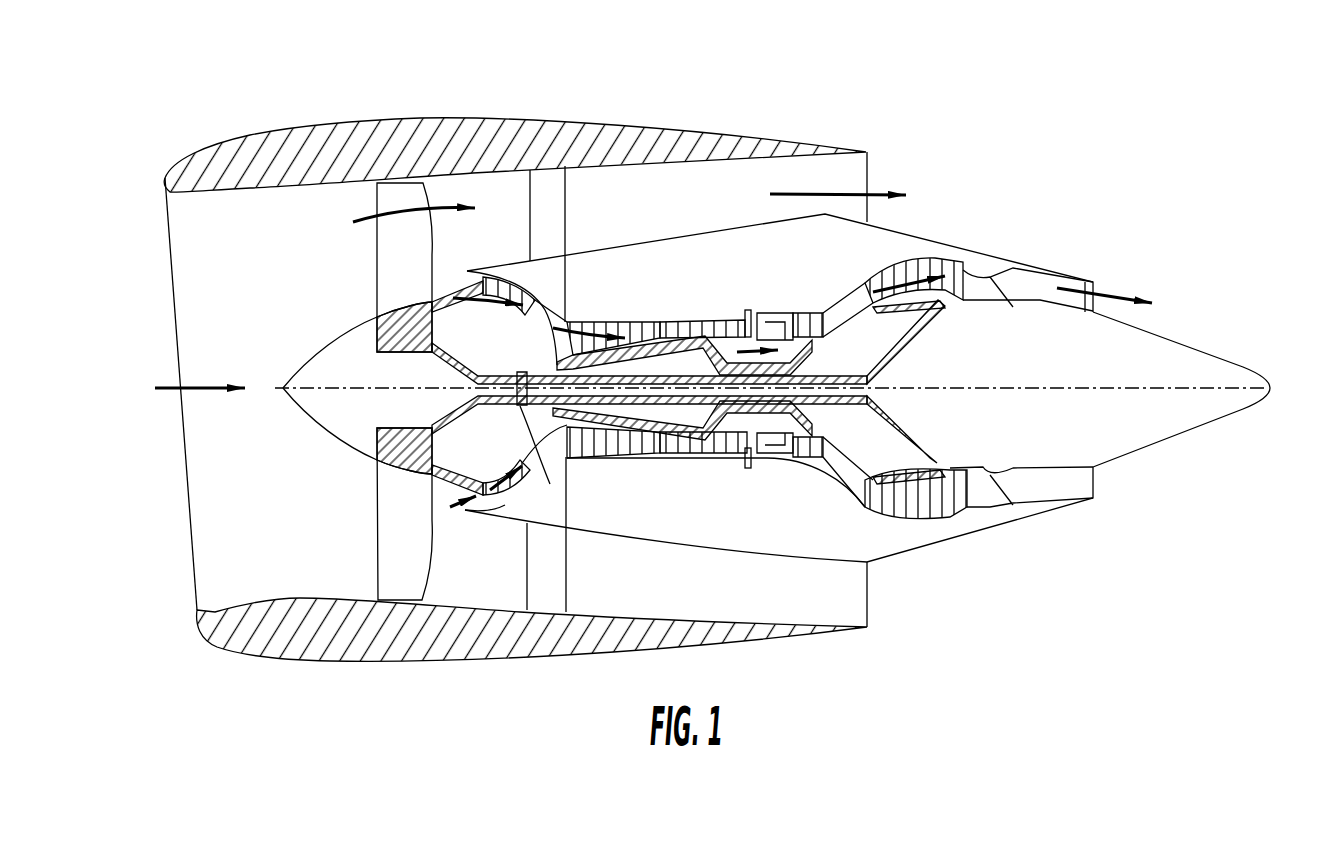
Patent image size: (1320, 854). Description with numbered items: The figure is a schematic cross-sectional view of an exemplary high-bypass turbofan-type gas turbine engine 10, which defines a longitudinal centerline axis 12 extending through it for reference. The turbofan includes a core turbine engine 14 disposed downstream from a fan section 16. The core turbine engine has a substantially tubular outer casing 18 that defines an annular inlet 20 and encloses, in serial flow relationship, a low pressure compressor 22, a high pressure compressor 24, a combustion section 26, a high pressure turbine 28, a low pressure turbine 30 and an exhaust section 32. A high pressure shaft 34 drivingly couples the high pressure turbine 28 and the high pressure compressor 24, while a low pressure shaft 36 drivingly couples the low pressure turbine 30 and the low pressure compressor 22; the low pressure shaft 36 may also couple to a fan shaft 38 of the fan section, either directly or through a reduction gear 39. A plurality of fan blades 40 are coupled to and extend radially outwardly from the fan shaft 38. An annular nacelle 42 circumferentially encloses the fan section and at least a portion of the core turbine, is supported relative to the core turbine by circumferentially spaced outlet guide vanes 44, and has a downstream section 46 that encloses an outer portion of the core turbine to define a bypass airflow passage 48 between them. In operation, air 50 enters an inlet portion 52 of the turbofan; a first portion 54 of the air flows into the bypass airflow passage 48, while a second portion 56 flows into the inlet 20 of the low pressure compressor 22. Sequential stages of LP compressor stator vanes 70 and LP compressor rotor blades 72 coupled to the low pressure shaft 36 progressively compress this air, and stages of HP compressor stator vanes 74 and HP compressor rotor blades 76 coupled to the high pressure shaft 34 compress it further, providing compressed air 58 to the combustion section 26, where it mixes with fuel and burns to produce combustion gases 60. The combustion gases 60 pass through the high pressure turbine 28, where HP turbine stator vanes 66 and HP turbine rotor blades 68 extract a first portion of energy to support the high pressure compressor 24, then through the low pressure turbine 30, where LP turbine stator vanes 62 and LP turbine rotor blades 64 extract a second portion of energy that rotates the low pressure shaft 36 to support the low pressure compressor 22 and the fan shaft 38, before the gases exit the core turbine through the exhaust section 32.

The turbofan gas turbine engine 10 is at (1007, 128).
The longitudinal centerline axis 12 is at (1040, 387).
The core turbine engine 14 is at (740, 268).
The fan section 16 is at (501, 390).
The outer casing 18 is at (722, 554).
The annular inlet 20 is at (478, 497).
The low pressure compressor 22 is at (522, 470).
The high pressure compressor 24 is at (597, 462).
The combustion section 26 is at (763, 464).
The high pressure turbine 28 is at (842, 452).
The low pressure turbine 30 is at (950, 518).
The exhaust section 32 is at (1100, 282).
The high pressure shaft 34 is at (793, 364).
The low pressure shaft 36 is at (522, 372).
The fan shaft 38 is at (418, 353).
The reduction gear 39 is at (539, 461).
The fan blades 40 is at (374, 541).
The nacelle 42 is at (423, 664).
The outlet guide vanes 44 is at (568, 192).
The downstream section of the nacelle 46 is at (780, 128).
The bypass airflow passage 48 is at (689, 214).
The air 50 is at (191, 380).
The inlet portion 52 is at (193, 610).
The first portion of the air 54 is at (362, 220).
The second portion of the air 56 is at (448, 283).
The compressed air 58 is at (746, 315).
The combustion gases 60 is at (800, 325).
The LP turbine stator vanes 62 is at (875, 275).
The LP turbine rotor blades 64 is at (880, 258).
The HP turbine stator vanes 66 is at (796, 462).
The HP turbine rotor blades 68 is at (815, 447).
The LP compressor stator vanes 70 is at (495, 505).
The LP compressor rotor blades 72 is at (515, 520).
The HP compressor stator vanes 74 is at (683, 456).
The HP compressor rotor blades 76 is at (693, 452).